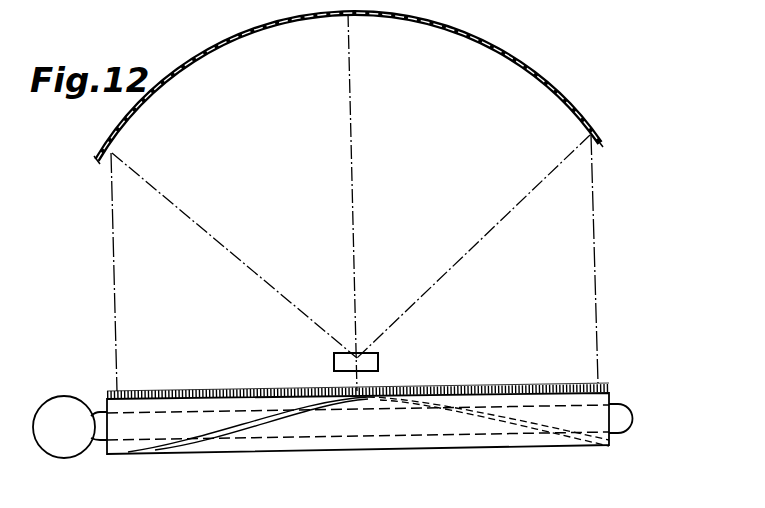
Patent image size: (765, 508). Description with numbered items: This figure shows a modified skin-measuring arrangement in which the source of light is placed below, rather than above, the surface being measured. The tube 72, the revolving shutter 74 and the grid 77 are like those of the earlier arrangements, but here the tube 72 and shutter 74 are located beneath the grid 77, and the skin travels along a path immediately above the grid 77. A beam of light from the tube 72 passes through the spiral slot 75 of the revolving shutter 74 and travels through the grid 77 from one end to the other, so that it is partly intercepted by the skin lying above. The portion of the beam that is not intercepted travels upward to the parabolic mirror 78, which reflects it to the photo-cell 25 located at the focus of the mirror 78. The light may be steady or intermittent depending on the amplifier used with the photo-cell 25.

The parabolic mirror 78 is at (553, 91).
The photo-cell 25 is at (370, 360).
The grid 77 is at (601, 385).
The revolving shutter 74 is at (610, 444).
The tube 72 is at (633, 416).
The spiral slot 75 is at (240, 427).